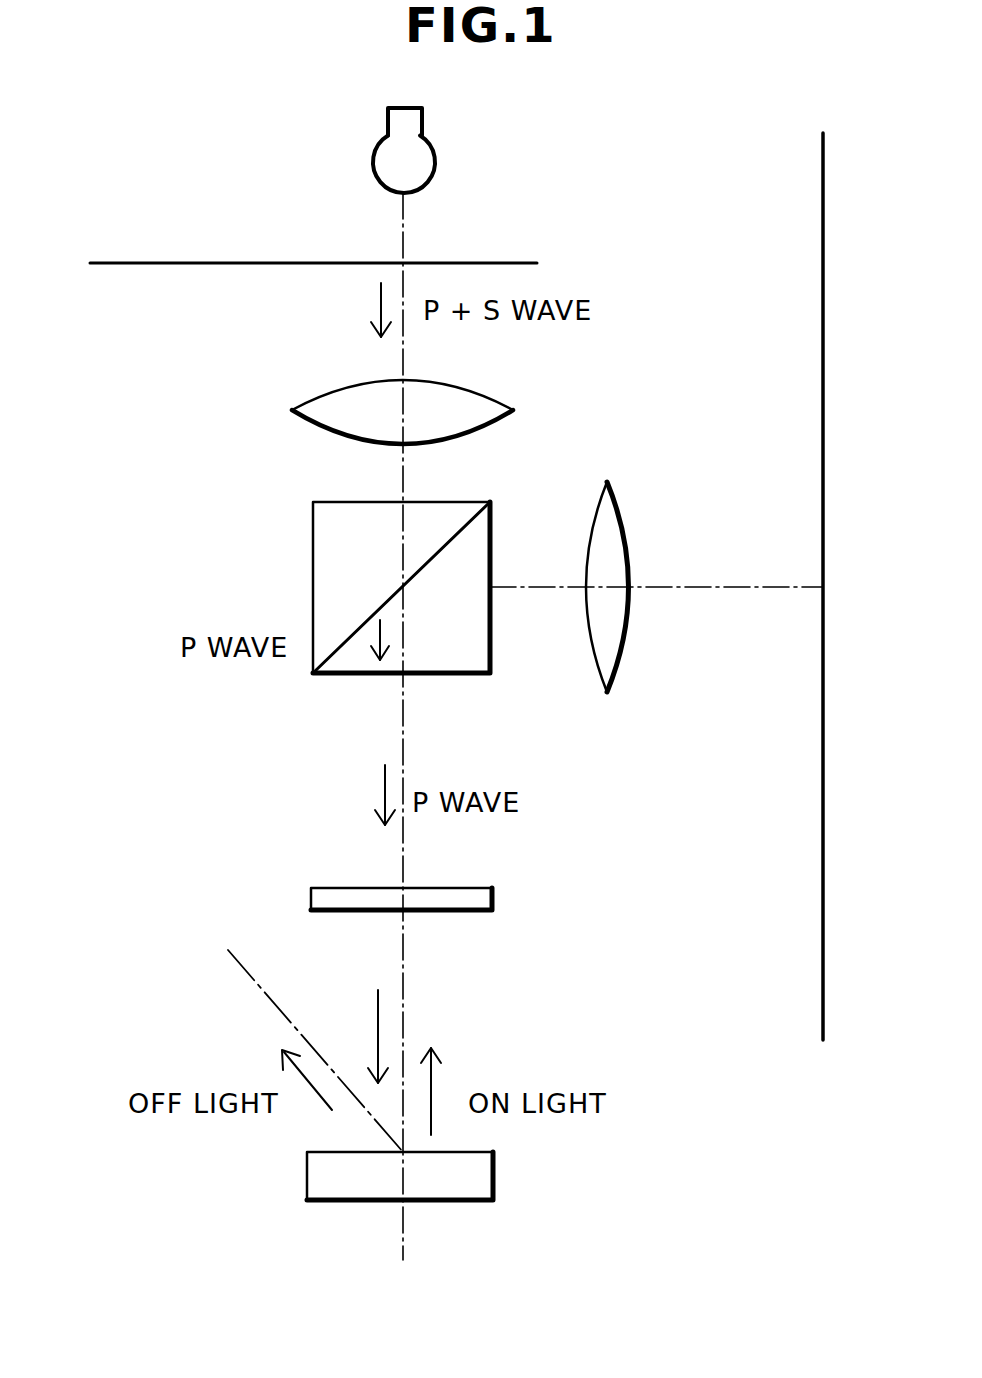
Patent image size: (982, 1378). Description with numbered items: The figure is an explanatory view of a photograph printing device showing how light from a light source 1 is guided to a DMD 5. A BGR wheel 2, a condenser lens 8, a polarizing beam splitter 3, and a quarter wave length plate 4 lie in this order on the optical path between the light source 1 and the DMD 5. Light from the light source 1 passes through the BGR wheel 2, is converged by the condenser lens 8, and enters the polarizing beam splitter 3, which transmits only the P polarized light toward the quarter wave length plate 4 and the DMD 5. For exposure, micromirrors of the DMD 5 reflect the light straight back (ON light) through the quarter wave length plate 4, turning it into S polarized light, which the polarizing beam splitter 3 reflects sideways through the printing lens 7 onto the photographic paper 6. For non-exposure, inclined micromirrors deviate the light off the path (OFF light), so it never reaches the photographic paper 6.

The light source 1 is at (422, 120).
The BGR wheel 2 is at (125, 263).
The polarizing beam splitter 3 is at (313, 587).
The quarter wave length plate 4 is at (492, 893).
The DMD 5 is at (460, 1200).
The photographic paper 6 is at (823, 990).
The printing lens 7 is at (635, 558).
The condenser lens 8 is at (313, 398).